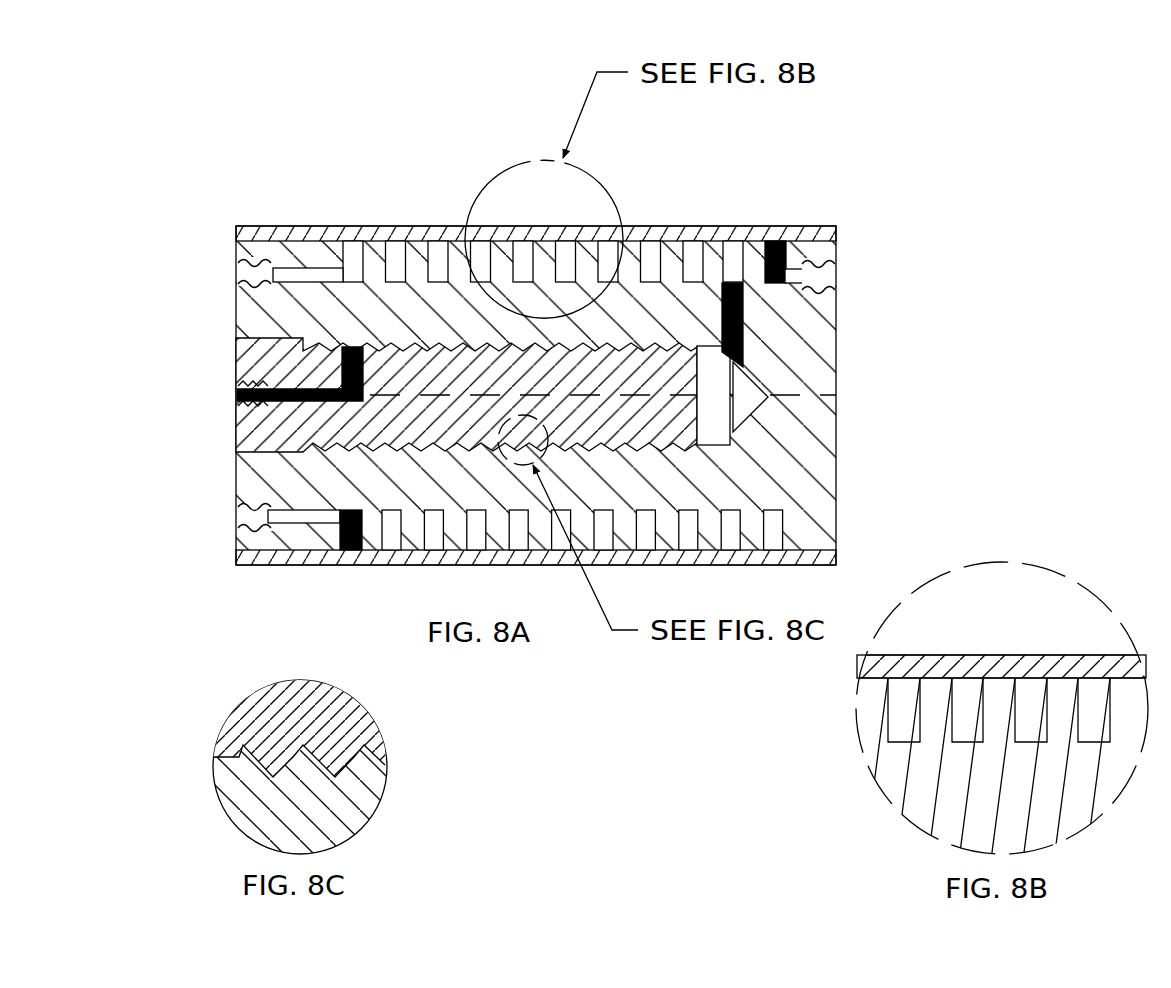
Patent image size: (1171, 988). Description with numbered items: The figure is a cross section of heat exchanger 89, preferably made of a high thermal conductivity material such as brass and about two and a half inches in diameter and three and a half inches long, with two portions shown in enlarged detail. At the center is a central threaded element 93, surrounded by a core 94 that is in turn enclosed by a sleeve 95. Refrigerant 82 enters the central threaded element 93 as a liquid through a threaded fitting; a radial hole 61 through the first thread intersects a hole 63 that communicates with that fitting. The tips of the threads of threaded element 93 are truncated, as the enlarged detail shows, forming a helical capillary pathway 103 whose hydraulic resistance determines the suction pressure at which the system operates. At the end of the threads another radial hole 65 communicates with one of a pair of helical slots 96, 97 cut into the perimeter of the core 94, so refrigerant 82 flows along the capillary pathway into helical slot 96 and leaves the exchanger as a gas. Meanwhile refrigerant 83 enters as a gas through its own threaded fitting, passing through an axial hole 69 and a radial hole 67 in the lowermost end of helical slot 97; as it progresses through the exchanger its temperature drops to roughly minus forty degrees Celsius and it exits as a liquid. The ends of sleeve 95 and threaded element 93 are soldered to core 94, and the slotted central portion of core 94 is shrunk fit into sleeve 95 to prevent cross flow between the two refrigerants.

In FIG. 8A, the radial hole 61 is at (366, 375).
In FIG. 8A, the hole 63 is at (254, 404).
In FIG. 8A, the radial hole 65 is at (720, 307).
In FIG. 8A, the radial hole 67 is at (355, 248).
In FIG. 8A, the axial hole 69 is at (286, 274).
In FIG. 8A, the refrigerant 82 is at (236, 393).
In FIG. 8A, the refrigerant 83 is at (236, 273).
In FIG. 8A, the heat exchanger 89 is at (78, 405).
In FIG. 8A, the central threaded element 93 is at (236, 312).
In FIG. 8A, the core 94 is at (236, 478).
In FIG. 8A, the sleeve 95 is at (236, 232).
In FIG. 8A, the helical slot 96 is at (349, 567).
In FIG. 8B, the helical slot 96 is at (908, 675).
In FIG. 8A, the helical slot 97 is at (777, 240).
In FIG. 8B, the helical slot 97 is at (970, 675).
In FIG. 8C, the helical capillary pathway 103 is at (242, 752).